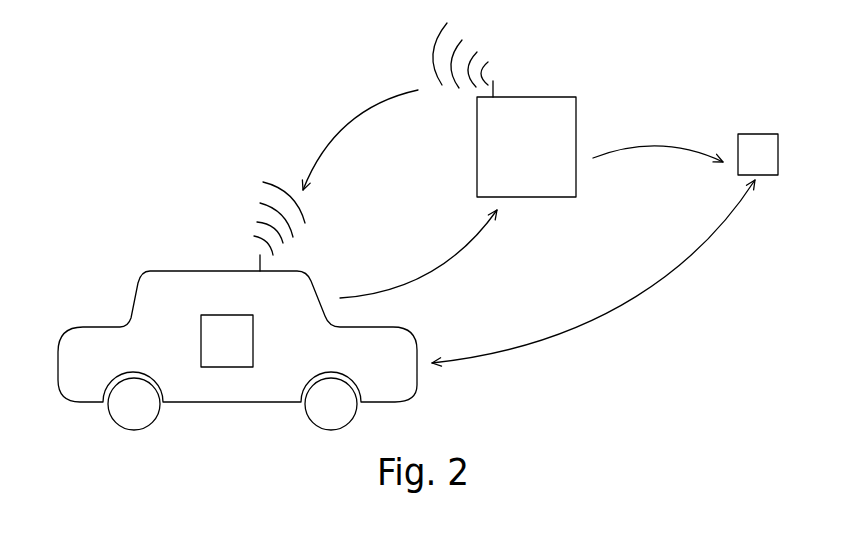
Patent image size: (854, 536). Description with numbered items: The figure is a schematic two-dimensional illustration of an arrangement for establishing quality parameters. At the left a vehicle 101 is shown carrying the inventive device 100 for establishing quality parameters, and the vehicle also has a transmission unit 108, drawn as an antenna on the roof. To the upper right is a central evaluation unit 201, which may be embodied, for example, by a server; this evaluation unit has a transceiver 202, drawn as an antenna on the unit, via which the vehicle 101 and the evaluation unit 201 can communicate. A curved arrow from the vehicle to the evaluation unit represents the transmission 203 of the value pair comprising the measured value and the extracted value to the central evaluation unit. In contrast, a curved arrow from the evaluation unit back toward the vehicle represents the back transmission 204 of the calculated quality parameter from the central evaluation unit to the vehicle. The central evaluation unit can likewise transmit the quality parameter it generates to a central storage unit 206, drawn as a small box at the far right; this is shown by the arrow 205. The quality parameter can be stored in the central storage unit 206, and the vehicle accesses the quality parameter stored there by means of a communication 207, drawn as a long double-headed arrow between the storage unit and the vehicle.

The device for establishing quality parameters 100 is at (212, 314).
The vehicle 101 is at (140, 272).
The transmission unit 108 is at (259, 256).
The central evaluation unit 201 is at (576, 115).
The transceiver 202 is at (497, 85).
The transmission of the value pair 203 is at (455, 256).
The back transmission of the calculated quality parameter 204 is at (342, 131).
The arrow 205 is at (660, 147).
The central storage unit 206 is at (760, 134).
The communication 207 is at (628, 303).